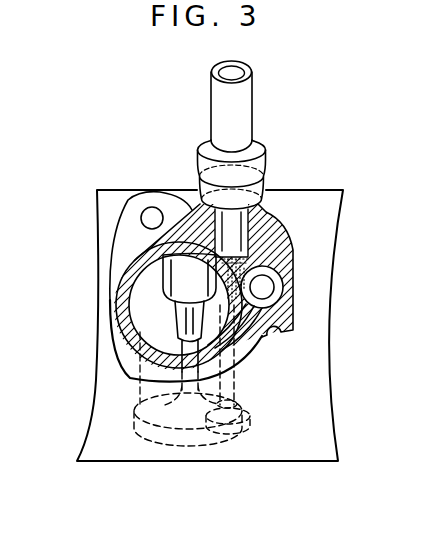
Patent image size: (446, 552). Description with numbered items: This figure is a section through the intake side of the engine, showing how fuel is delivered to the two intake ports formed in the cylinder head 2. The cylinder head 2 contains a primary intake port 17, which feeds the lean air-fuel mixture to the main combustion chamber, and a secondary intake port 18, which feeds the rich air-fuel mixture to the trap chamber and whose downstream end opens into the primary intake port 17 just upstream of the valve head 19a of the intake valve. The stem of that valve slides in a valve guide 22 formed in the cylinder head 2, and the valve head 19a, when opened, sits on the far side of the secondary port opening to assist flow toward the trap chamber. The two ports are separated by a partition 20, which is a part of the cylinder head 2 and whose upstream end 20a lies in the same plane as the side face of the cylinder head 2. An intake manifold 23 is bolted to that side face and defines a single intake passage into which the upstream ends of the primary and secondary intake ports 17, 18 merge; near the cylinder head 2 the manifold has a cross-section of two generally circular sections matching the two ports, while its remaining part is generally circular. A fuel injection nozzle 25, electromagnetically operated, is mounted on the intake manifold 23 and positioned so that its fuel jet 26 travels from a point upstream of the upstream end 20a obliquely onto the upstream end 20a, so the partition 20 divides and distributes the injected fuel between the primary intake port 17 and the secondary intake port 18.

The cylinder head 2 is at (307, 200).
The primary intake port 17 is at (150, 297).
The secondary intake port 18 is at (263, 287).
The valve head 19a is at (192, 418).
The partition 20 is at (217, 436).
The upstream end of the partition 20a is at (288, 325).
The valve guide 22 is at (175, 333).
The intake manifold 23 is at (279, 229).
The fuel injection nozzle 25 is at (252, 106).
The jet 26 is at (282, 266).